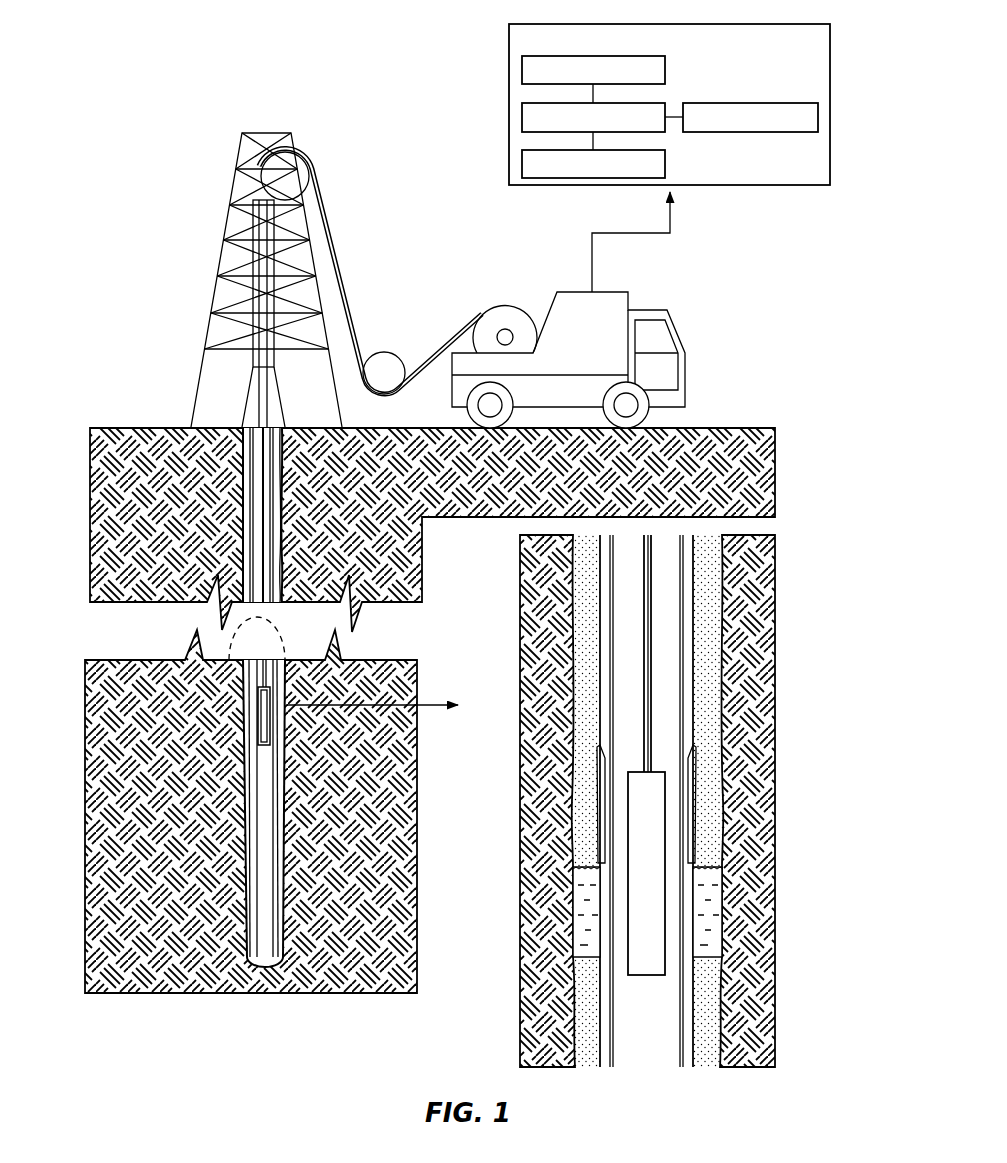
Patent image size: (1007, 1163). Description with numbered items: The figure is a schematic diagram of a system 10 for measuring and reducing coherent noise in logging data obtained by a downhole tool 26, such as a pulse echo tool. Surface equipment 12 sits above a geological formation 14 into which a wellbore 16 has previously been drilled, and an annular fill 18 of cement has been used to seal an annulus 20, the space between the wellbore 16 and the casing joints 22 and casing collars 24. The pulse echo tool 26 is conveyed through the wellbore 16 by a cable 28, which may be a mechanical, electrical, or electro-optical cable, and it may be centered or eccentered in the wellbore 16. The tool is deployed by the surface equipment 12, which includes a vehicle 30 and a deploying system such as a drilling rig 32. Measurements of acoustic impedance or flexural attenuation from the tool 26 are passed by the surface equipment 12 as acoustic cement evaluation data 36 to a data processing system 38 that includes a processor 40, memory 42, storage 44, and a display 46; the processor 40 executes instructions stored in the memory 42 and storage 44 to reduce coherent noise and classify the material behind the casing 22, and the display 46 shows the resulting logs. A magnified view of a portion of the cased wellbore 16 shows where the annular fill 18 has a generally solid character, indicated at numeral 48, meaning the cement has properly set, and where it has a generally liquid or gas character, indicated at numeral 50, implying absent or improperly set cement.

The system 10 is at (60, 955).
The surface equipment 12 is at (455, 210).
The geological formation 14 is at (95, 765).
The wellbore 16 is at (232, 475).
The annular fill 18 is at (232, 502).
The annulus 20 is at (232, 545).
The casing joints 22 is at (243, 838).
The casing collars 24 is at (290, 903).
The downhole tool 26 is at (255, 700).
The cable 28 is at (345, 272).
The vehicle 30 is at (568, 290).
The drilling rig 32 is at (225, 198).
The acoustic cement evaluation data 36 is at (672, 210).
The data processing system 38 is at (672, 24).
The processor 40 is at (665, 101).
The memory 42 is at (522, 69).
The storage 44 is at (661, 162).
The display 46 is at (752, 103).
The generally solid character 48 is at (712, 660).
The generally liquid or gas character 50 is at (710, 903).